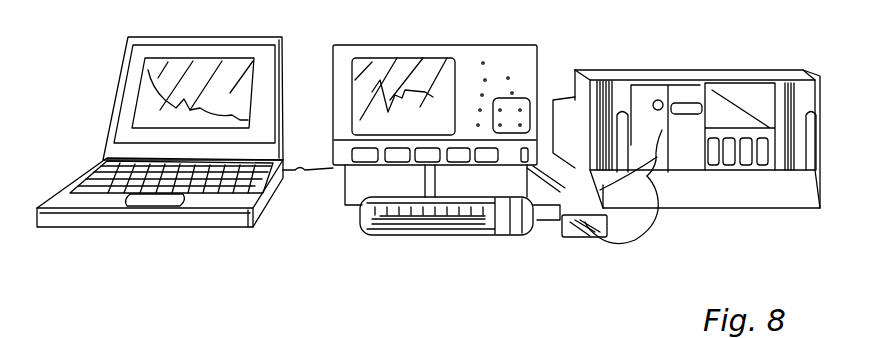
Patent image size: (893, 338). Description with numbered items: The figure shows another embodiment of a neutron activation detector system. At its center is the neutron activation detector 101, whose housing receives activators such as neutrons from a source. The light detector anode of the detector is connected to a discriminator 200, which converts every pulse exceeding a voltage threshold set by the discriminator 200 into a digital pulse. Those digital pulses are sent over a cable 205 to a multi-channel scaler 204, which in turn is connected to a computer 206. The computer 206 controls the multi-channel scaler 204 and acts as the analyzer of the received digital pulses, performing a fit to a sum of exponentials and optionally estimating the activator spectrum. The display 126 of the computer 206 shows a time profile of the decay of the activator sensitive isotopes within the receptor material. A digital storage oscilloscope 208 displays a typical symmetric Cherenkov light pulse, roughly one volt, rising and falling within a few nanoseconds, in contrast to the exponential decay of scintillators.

The display 126 is at (147, 100).
The computer 206 is at (186, 211).
The digital storage oscilloscope 208 is at (505, 53).
The neutron activation detector 101 is at (447, 233).
The multi-channel scaler 204 is at (578, 238).
The cable 205 is at (656, 224).
The discriminator 200 is at (722, 68).